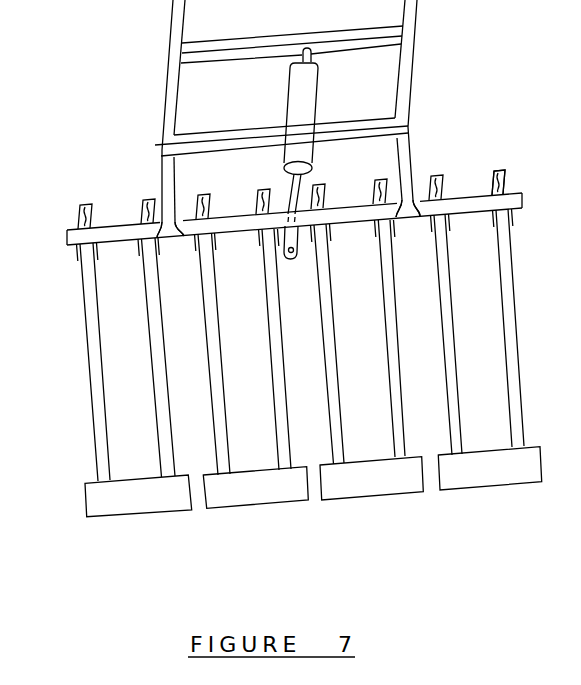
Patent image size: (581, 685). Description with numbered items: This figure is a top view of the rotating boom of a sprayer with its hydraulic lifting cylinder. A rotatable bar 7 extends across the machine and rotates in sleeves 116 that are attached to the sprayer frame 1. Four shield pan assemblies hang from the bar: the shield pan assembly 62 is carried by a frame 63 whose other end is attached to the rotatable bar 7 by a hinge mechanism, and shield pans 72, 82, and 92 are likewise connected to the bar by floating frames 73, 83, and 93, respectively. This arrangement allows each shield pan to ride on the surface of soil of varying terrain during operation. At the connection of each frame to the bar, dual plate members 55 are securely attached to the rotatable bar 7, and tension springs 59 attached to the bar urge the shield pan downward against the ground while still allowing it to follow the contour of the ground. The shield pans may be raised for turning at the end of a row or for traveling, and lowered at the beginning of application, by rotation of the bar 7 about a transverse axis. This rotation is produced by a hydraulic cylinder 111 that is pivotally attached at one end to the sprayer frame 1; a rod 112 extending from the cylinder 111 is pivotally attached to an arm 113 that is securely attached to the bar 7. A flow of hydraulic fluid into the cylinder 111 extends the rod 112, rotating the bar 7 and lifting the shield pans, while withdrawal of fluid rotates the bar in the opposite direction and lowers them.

The sprayer frame 1 is at (412, 84).
The rotatable bar 7 is at (455, 196).
The plate members 55 is at (75, 257).
The tension springs 59 is at (503, 176).
The shield pan assembly 62 is at (138, 515).
The frame 63 is at (151, 380).
The shield pan 72 is at (257, 506).
The floating frame 73 is at (272, 378).
The shield pan 82 is at (360, 498).
The floating frame 83 is at (386, 348).
The shield pan 92 is at (472, 489).
The floating frame 93 is at (505, 346).
The hydraulic cylinder 111 is at (285, 97).
The rod 112 is at (287, 191).
The arm 113 is at (281, 263).
The sleeves 116 is at (178, 238).